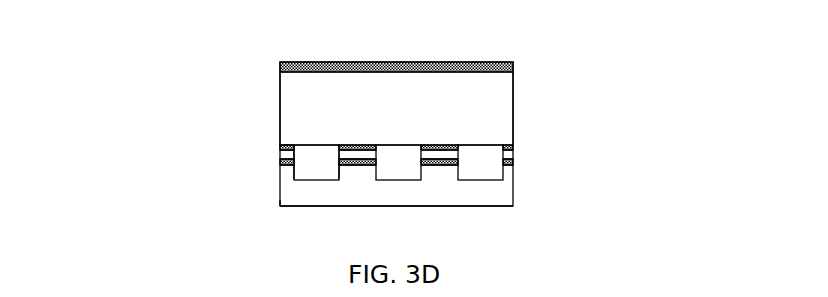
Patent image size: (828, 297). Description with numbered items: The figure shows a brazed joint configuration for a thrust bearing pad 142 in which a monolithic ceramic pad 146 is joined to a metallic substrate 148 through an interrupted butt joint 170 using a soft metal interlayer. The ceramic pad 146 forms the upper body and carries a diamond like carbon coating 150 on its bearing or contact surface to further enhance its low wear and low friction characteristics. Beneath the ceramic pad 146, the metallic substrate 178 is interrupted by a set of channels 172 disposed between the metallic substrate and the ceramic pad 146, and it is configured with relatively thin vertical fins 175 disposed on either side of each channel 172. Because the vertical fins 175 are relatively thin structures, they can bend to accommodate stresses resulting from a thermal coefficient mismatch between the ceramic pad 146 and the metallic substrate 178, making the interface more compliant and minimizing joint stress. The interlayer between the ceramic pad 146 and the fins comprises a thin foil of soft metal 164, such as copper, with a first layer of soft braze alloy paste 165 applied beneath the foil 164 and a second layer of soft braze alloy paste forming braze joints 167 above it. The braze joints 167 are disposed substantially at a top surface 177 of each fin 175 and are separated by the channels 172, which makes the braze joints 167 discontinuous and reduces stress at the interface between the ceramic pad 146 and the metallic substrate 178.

The thrust bearing pad 142 is at (173, 145).
The ceramic pad 146 is at (410, 115).
The metallic substrate 148 is at (294, 217).
The diamond like carbon coating 150 is at (513, 68).
The soft metal foil 164 is at (280, 155).
The first layer of soft braze alloy paste 165 is at (513, 163).
The braze joints 167 is at (513, 148).
The butt joint 170 is at (266, 166).
The channels 172 is at (320, 185).
The vertical fins 175 is at (337, 168).
The top surface 177 is at (286, 135).
The metallic substrate 178 is at (279, 190).